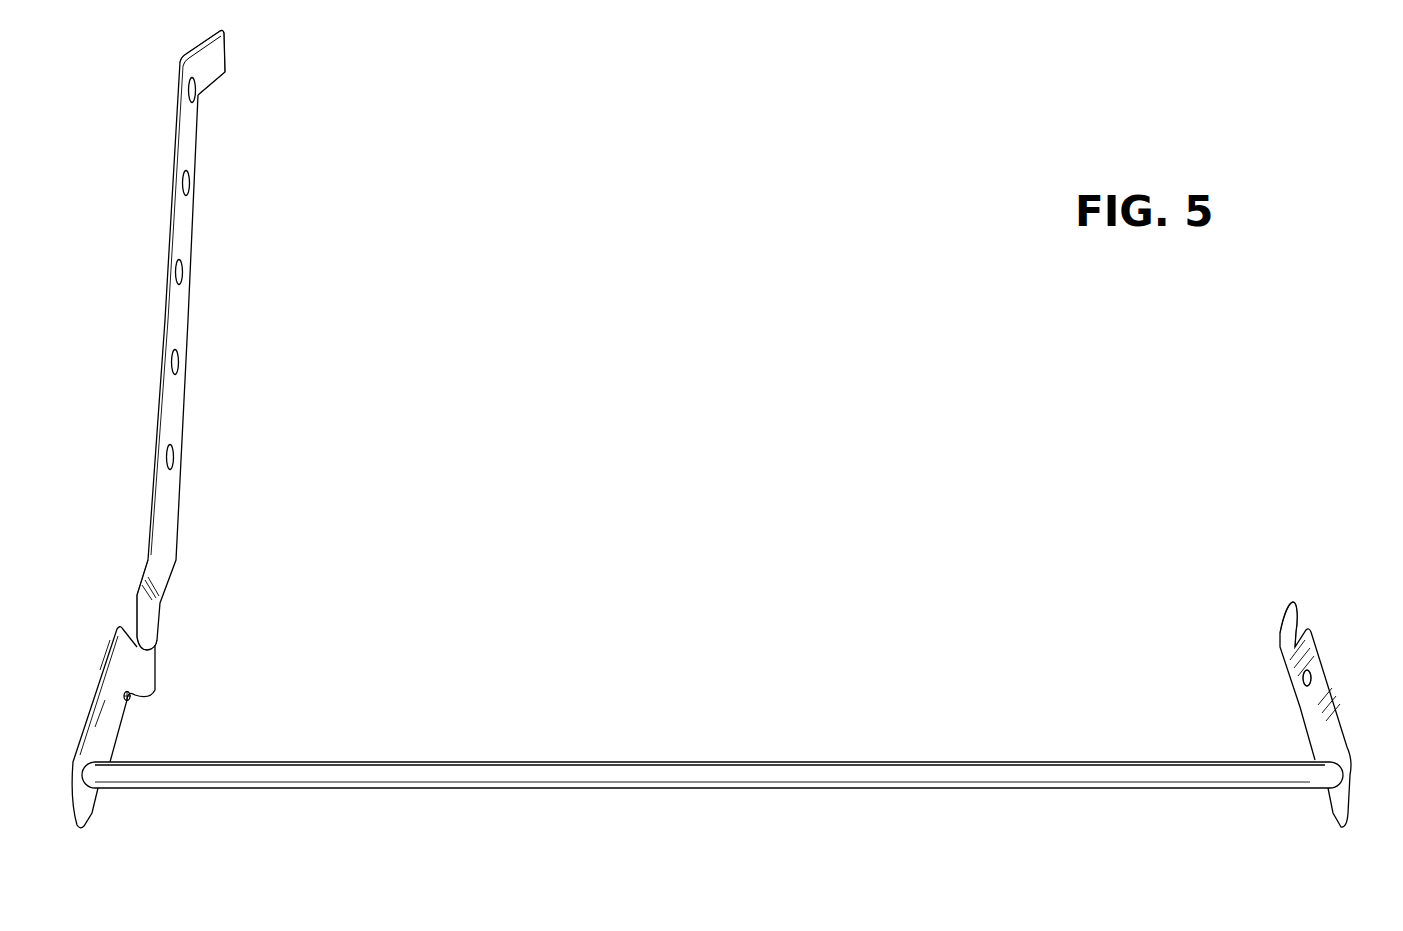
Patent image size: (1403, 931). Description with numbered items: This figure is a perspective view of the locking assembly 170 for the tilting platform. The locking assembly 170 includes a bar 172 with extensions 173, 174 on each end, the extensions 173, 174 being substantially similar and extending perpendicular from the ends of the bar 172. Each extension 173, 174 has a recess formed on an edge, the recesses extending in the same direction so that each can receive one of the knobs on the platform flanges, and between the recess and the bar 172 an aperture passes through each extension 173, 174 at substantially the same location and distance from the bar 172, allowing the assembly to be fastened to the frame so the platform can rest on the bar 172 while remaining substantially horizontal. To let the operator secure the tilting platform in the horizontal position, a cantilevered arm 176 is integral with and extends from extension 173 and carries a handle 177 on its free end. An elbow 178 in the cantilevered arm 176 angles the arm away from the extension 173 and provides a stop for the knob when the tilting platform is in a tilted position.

The locking assembly 170 is at (818, 587).
The bar 172 is at (648, 775).
The extension 173 is at (98, 727).
The extension 174 is at (1327, 743).
The cantilevered arm 176 is at (173, 400).
The handle 177 is at (207, 70).
The elbow 178 is at (163, 562).